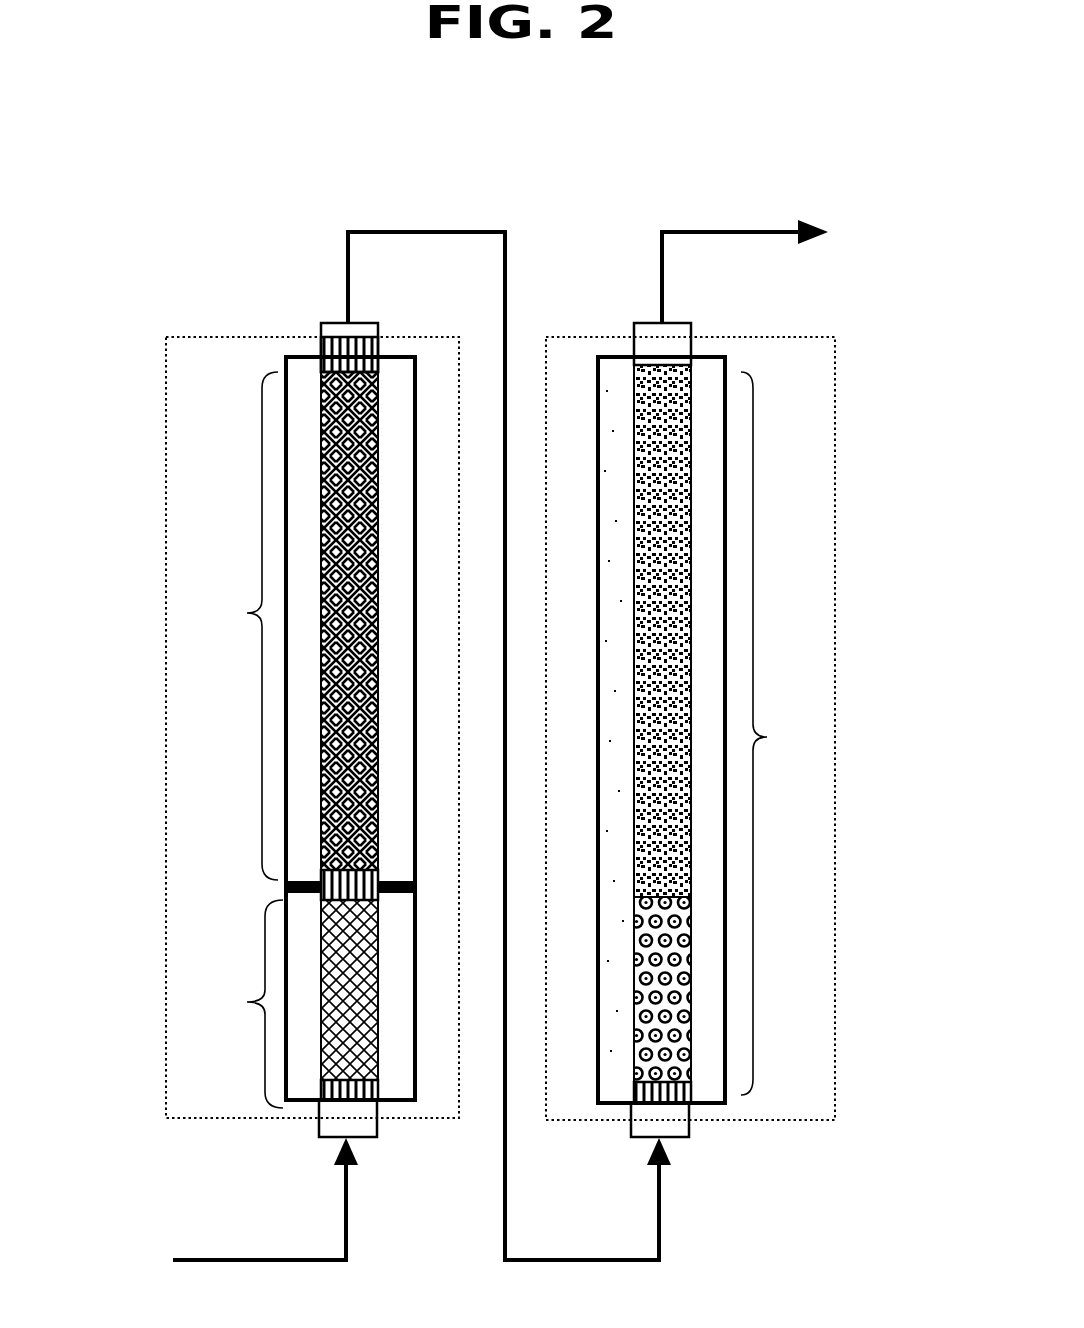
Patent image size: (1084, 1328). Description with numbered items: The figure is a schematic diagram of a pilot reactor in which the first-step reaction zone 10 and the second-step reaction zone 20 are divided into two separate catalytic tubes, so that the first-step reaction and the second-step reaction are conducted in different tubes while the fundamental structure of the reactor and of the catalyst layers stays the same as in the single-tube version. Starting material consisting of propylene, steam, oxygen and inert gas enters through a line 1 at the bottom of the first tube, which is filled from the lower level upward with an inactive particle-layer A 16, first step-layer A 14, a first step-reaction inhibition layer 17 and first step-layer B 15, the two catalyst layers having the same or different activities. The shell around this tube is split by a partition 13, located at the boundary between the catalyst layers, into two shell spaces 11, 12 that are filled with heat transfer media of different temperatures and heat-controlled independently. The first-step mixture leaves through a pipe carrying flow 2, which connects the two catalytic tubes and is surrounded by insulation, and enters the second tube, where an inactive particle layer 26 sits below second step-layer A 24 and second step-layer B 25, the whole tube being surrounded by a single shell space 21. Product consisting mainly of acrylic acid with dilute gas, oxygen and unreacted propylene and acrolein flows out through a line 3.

The reactant flow line 1 is at (251, 1204).
The connecting pipe flow 2 is at (509, 731).
The product flow line 3 is at (745, 262).
The first-step reaction zone 10 is at (294, 730).
The first shell space 11 is at (296, 1003).
The second shell space 12 is at (245, 626).
The partition 13 is at (270, 888).
The first step-layer A 14 is at (283, 1003).
The first step-layer B 15 is at (300, 672).
The inactive particle-layer A 16 is at (300, 1112).
The first step-reaction inhibition layer 17 is at (308, 907).
The second-step reaction zone 20 is at (711, 730).
The shell space of second-step reaction zone 21 is at (776, 733).
The second step-layer A 24 is at (716, 997).
The second step-layer B 25 is at (716, 673).
The inactive particle layer of second-step tube 26 is at (714, 1119).